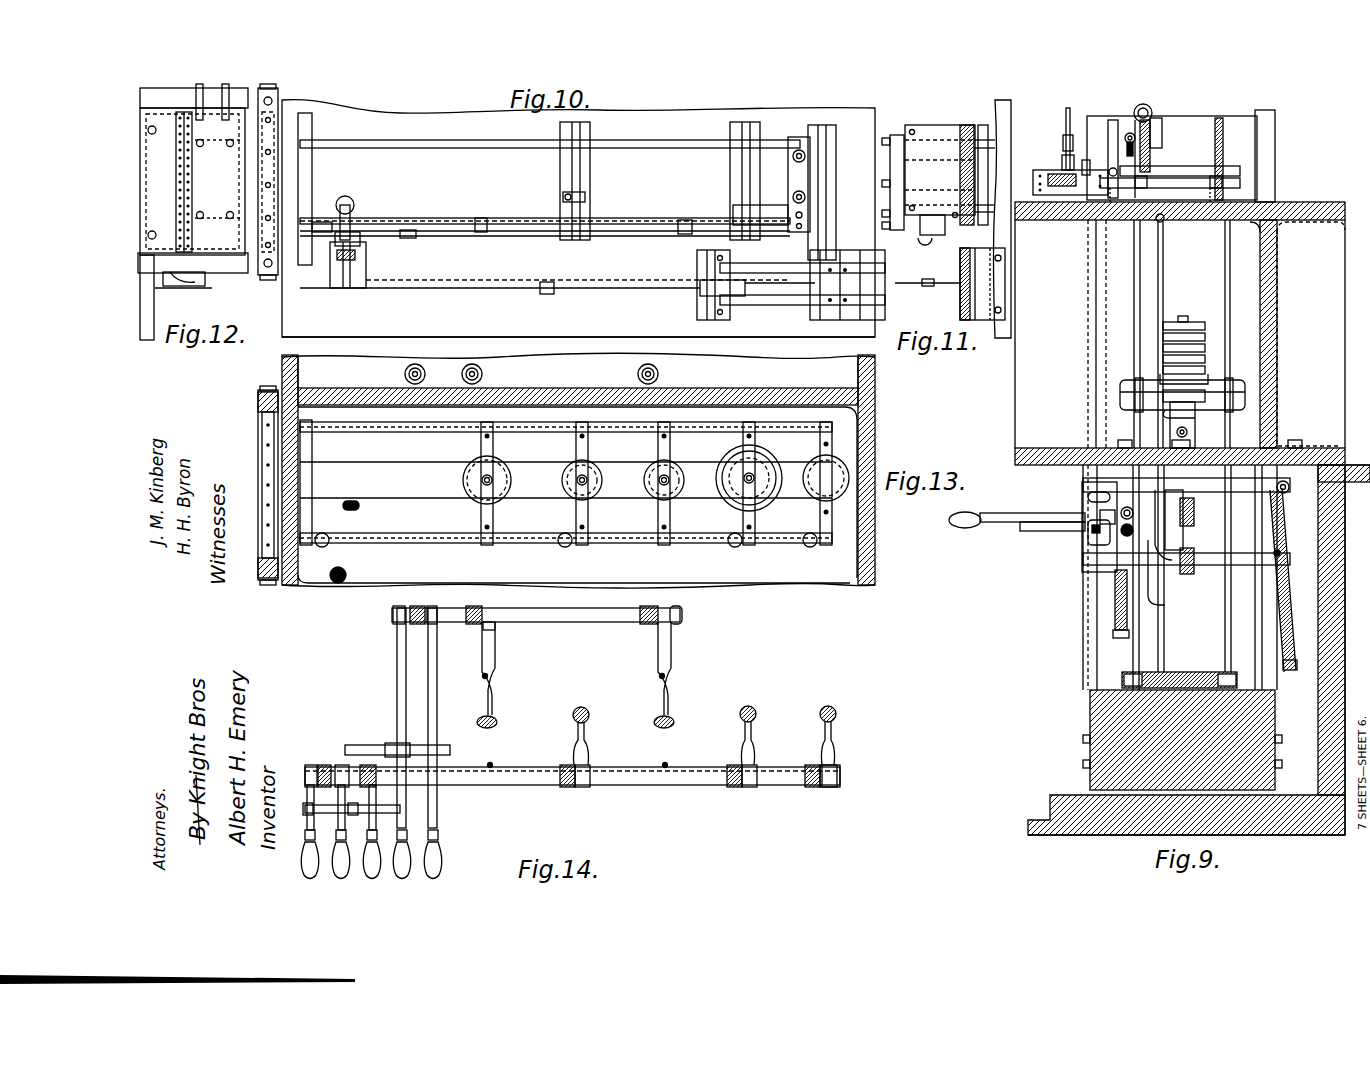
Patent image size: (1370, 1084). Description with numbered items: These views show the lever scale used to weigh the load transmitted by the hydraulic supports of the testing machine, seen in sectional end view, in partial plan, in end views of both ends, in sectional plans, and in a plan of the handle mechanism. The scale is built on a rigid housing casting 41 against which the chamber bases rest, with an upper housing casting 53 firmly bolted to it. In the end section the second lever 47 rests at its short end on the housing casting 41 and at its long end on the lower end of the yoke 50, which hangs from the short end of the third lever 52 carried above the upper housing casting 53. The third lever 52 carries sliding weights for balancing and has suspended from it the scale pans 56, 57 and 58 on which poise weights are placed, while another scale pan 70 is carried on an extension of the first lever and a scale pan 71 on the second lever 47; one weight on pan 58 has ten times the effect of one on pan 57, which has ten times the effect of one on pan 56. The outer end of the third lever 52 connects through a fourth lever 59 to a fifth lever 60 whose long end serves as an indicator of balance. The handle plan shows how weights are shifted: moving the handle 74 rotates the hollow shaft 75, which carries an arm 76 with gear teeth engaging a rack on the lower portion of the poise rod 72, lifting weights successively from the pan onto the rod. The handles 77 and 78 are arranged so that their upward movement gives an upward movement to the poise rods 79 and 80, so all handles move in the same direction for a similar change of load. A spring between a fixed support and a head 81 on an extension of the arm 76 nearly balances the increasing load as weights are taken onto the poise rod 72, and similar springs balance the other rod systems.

In FIG. 9, the housing casting 41 is at (1072, 783).
In FIG. 9, the second lever 47 is at (1095, 688).
In FIG. 13, the yoke 50 is at (258, 398).
In FIG. 10, the third lever 52 is at (620, 217).
In FIG. 10, the upper housing casting 53 is at (527, 339).
In FIG. 9, the upper housing casting 53 is at (1197, 222).
In FIG. 13, the scale pan 56 is at (590, 511).
In FIG. 13, the scale pan 57 is at (755, 513).
In FIG. 13, the scale pan 58 is at (832, 520).
In FIG. 10, the fourth lever 59 is at (757, 305).
In FIG. 10, the fifth lever 60 is at (700, 287).
In FIG. 9, the scale pan 70 is at (1188, 398).
In FIG. 13, the scale pan 70 is at (672, 511).
In FIG. 13, the scale pan 71 is at (495, 513).
In FIG. 9, the poise rod 72 is at (1193, 515).
In FIG. 14, the poise rod 72 is at (589, 710).
In FIG. 14, the handle 74 is at (358, 876).
In FIG. 14, the hollow shaft 75 is at (517, 767).
In FIG. 9, the arm 76 is at (1165, 565).
In FIG. 14, the arm 76 is at (590, 743).
In FIG. 9, the handle 77 is at (968, 525).
In FIG. 14, the handle 77 is at (442, 862).
In FIG. 14, the handle 78 is at (405, 873).
In FIG. 9, the poise rod 79 is at (1190, 566).
In FIG. 14, the poise rod 79 is at (659, 730).
In FIG. 14, the poise rod 80 is at (482, 728).
In FIG. 9, the head 81 is at (1128, 548).